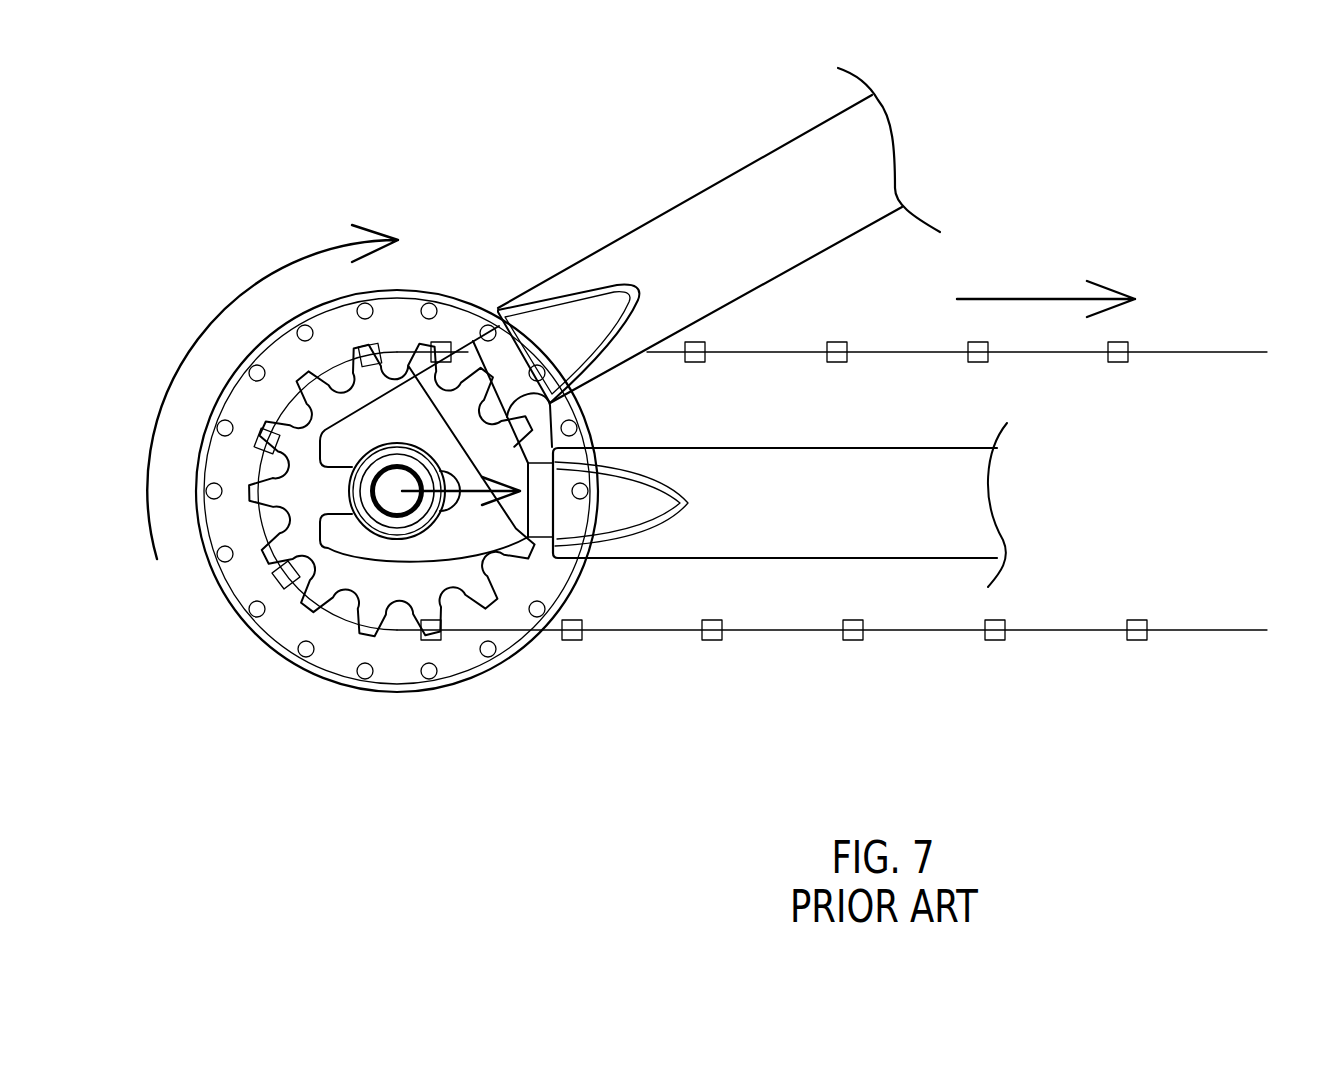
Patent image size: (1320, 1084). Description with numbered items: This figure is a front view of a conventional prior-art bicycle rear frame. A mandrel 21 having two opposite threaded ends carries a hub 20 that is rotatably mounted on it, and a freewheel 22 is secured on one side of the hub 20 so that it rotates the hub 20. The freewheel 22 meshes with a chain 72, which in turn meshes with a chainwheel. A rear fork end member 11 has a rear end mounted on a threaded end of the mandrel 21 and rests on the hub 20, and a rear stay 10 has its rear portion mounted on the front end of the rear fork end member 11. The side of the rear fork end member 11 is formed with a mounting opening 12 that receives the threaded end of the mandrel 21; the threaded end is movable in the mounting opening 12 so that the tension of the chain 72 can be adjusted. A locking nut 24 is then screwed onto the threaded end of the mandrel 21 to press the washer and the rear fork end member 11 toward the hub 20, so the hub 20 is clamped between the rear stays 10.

The rear stay 10 is at (987, 505).
The rear fork end member 11 is at (462, 533).
The mounting opening 12 is at (335, 487).
The hub 20 is at (527, 650).
The mandrel 21 is at (393, 497).
The freewheel 22 is at (397, 592).
The locking nut 24 is at (417, 453).
The chain 72 is at (1127, 643).